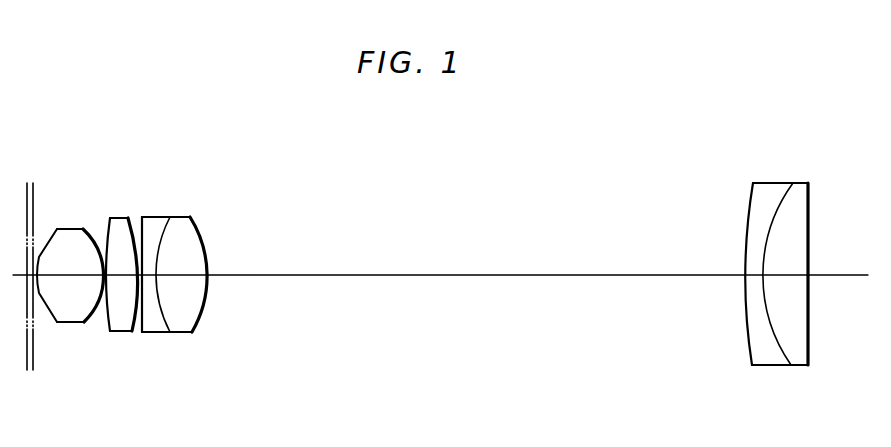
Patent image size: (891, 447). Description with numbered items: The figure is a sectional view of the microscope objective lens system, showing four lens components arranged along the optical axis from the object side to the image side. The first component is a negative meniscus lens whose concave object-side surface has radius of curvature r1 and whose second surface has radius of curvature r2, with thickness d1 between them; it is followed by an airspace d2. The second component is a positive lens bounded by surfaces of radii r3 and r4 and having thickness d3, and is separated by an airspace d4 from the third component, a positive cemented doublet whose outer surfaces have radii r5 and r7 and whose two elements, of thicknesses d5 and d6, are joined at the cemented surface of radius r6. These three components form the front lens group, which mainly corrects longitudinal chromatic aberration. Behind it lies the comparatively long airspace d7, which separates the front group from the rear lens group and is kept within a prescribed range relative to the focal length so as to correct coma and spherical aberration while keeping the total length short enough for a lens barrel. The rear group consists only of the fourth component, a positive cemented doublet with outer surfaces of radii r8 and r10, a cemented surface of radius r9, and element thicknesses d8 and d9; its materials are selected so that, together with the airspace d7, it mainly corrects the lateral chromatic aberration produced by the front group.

The thickness of the first lens component d1 is at (75, 274).
The airspace between the first and second lens components d2 is at (100, 257).
The thickness of the second lens component d3 is at (120, 270).
The airspace between the second and third lens components d4 is at (140, 240).
The thickness of the first element of the third lens component d5 is at (150, 272).
The thickness of the second element of the third lens component d6 is at (182, 272).
The airspace between the third and fourth lens components d7 is at (450, 275).
The thickness of the first element of the fourth lens component d8 is at (753, 274).
The thickness of the second element of the fourth lens component d9 is at (787, 274).
The radius of curvature of the object-side surface of the first lens component r1 is at (40, 288).
The radius of curvature of the image-side surface of the first lens component r2 is at (92, 317).
The radius of curvature of the object-side surface of the second lens component r3 is at (104, 305).
The radius of curvature of the image-side surface of the second lens component r4 is at (138, 322).
The radius of curvature of the object-side surface of the third lens component r5 is at (141, 316).
The radius of curvature of the cemented surface of the third lens component r6 is at (168, 332).
The radius of curvature of the image-side surface of the third lens component r7 is at (197, 320).
The radius of curvature of the object-side surface of the fourth lens component r8 is at (745, 357).
The radius of curvature of the cemented surface of the fourth lens component r9 is at (782, 365).
The radius of curvature of the image-side surface of the fourth lens component r10 is at (810, 348).